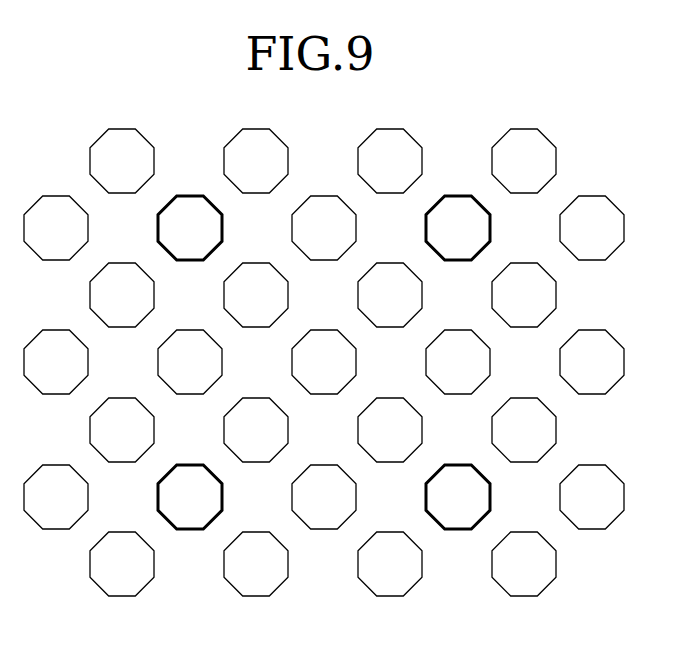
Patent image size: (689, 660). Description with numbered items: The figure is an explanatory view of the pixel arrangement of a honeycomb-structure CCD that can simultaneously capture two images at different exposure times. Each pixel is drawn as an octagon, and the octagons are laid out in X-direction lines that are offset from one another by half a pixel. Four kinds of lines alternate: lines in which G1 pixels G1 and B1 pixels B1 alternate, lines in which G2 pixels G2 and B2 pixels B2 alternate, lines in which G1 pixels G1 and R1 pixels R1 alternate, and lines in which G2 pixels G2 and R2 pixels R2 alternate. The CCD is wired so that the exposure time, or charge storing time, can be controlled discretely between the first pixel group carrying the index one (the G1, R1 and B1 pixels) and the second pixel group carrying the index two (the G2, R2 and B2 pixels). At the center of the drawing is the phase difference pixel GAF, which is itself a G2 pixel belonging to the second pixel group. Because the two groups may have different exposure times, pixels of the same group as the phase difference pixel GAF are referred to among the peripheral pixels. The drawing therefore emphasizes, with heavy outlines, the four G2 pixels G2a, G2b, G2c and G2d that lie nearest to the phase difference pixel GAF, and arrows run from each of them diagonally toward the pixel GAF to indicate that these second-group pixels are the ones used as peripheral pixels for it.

The G1 pixel G1 is at (323, 362).
The R1 pixel R1 is at (390, 295).
The B1 pixel B1 is at (256, 429).
The G2 pixel G2 is at (324, 362).
The R2 pixel R2 is at (324, 362).
The B2 pixel B2 is at (324, 362).
The phase difference pixel GAF is at (324, 362).
The G2 pixel G2a is at (355, 331).
The G2 pixel G2b is at (293, 331).
The G2 pixel G2c is at (293, 393).
The G2 pixel G2d is at (355, 393).